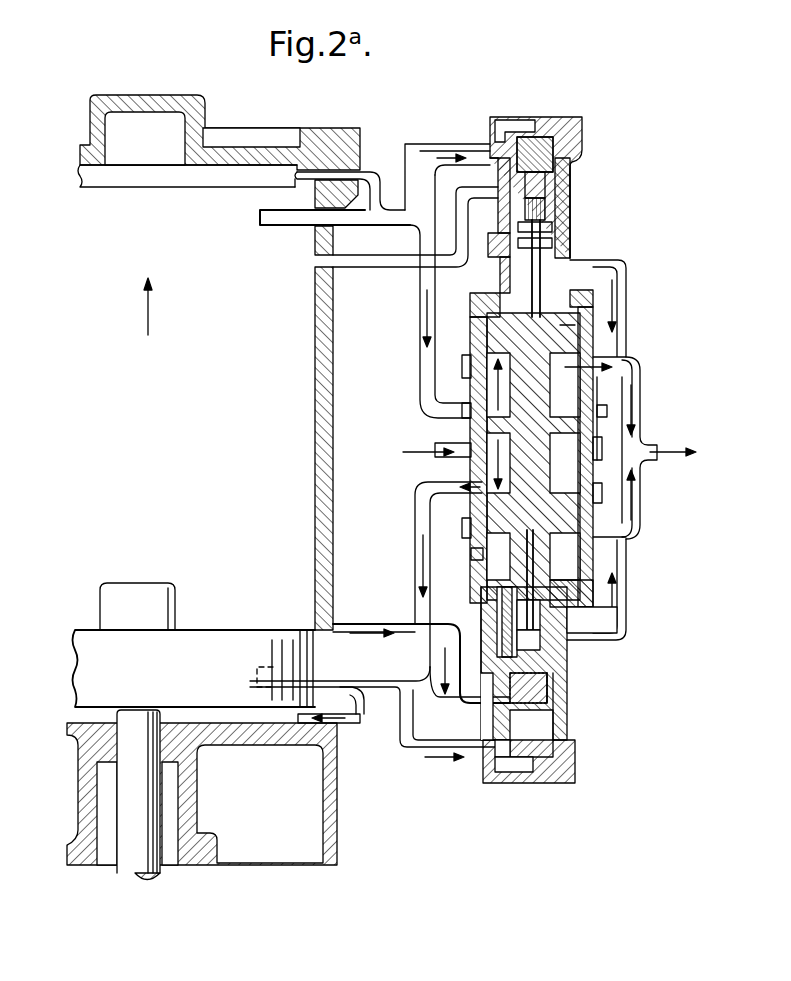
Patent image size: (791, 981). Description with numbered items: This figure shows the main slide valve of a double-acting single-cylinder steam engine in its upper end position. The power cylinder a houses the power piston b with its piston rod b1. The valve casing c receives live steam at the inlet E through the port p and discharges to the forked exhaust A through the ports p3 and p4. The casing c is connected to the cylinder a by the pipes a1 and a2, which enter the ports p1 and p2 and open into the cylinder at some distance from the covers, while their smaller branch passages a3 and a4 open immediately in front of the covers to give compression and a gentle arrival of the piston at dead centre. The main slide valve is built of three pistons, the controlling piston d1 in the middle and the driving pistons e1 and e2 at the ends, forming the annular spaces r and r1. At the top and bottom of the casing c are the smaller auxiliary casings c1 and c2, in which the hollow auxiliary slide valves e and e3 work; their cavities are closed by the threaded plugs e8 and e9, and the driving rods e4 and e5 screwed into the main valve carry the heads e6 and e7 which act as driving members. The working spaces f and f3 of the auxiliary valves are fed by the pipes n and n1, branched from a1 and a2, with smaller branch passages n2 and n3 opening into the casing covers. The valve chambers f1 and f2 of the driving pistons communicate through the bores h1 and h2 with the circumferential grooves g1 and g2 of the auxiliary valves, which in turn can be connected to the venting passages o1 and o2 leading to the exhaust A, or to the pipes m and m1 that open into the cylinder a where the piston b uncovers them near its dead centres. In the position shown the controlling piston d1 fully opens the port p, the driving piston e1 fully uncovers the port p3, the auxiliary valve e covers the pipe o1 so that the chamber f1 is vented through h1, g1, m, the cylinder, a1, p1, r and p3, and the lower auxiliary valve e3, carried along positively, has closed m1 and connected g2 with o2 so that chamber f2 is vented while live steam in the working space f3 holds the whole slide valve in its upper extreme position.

The power cylinder a is at (315, 338).
The steam pipe a1 is at (419, 322).
The steam pipe a2 is at (413, 530).
The branch passage a3 is at (368, 176).
The branch passage a4 is at (362, 724).
The power piston b is at (219, 647).
The piston rod b1 is at (140, 873).
The pipe m is at (369, 269).
The pipe m1 is at (370, 624).
The pipe n is at (448, 145).
The pipe n1 is at (420, 750).
The branch passage n2 is at (520, 128).
The branch passage n3 is at (514, 772).
The working space f is at (565, 125).
The valve chamber f1 is at (593, 316).
The valve chamber f2 is at (582, 558).
The working space f3 is at (574, 744).
The auxiliary casing c1 is at (579, 163).
The auxiliary casing c2 is at (567, 724).
The valve casing c is at (593, 392).
The auxiliary slide valve e is at (570, 188).
The driving piston e1 is at (562, 330).
The driving piston e2 is at (603, 499).
The auxiliary slide valve e3 is at (548, 695).
The driving rod e4 is at (576, 240).
The driving rod e5 is at (568, 619).
The head e6 is at (546, 208).
The head e7 is at (546, 652).
The threaded plug e8 is at (568, 167).
The threaded plug e9 is at (523, 703).
The circumferential groove g1 is at (552, 226).
The circumferential groove g2 is at (548, 690).
The bore h1 is at (470, 308).
The bore h2 is at (492, 623).
The venting passage o1 is at (628, 290).
The venting passage o2 is at (628, 625).
The controlling piston d1 is at (583, 425).
The annular space r is at (604, 412).
The annular space r1 is at (602, 457).
The port p is at (467, 466).
The port p1 is at (477, 410).
The port p2 is at (472, 516).
The port p3 is at (474, 367).
The port p4 is at (482, 553).
The steam inlet E is at (412, 454).
The exhaust A is at (680, 452).